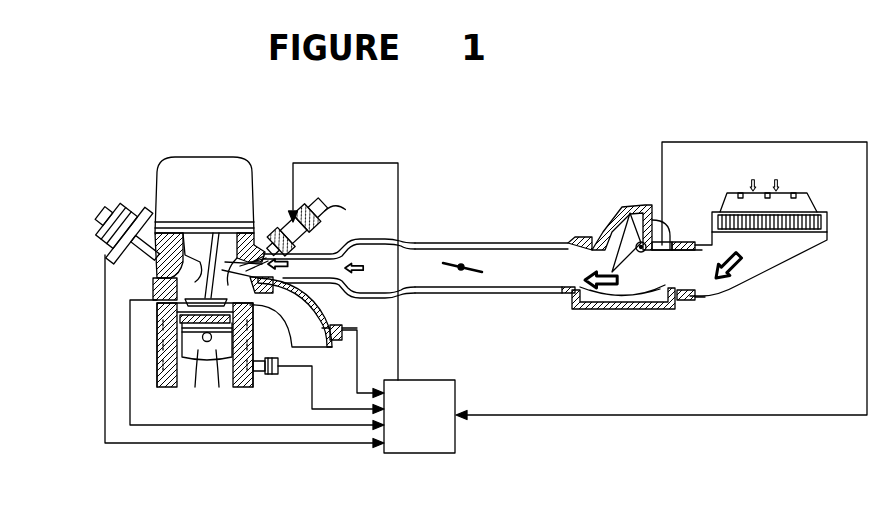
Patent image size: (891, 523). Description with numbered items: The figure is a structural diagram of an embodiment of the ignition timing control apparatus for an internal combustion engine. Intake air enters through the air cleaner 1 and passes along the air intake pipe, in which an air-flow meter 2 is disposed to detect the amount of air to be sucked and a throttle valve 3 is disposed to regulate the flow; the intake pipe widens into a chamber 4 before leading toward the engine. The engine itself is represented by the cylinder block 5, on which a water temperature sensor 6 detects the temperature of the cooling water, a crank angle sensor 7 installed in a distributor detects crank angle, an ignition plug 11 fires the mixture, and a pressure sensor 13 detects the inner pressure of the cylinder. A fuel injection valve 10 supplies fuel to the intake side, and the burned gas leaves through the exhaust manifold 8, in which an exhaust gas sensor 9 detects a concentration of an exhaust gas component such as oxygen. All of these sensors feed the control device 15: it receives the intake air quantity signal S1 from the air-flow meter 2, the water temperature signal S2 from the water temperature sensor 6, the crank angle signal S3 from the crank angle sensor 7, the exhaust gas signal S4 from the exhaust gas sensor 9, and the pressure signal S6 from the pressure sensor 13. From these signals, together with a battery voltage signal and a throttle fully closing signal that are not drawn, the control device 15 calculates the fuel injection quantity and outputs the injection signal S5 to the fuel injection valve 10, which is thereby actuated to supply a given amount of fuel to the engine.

The air cleaner 1 is at (777, 233).
The air-flow meter 2 is at (640, 203).
The throttle valve 3 is at (476, 267).
The intake passage chamber 4 is at (361, 250).
The cylinder block 5 is at (248, 331).
The water temperature sensor 6 is at (268, 376).
The crank angle sensor 7 is at (97, 240).
The exhaust manifold 8 is at (302, 312).
The exhaust gas sensor 9 is at (357, 337).
The fuel injection valve 10 is at (288, 225).
The ignition plug 11 is at (160, 281).
The pressure sensor 13 is at (150, 296).
The control device 15 is at (455, 390).
The signal of intake air quantity S1 is at (675, 417).
The signal of water temperature S2 is at (331, 390).
The crank angle signal S3 is at (317, 444).
The signal of exhaust gas S4 is at (350, 364).
The injection signal S5 is at (399, 372).
The signal of pressure S6 is at (207, 426).